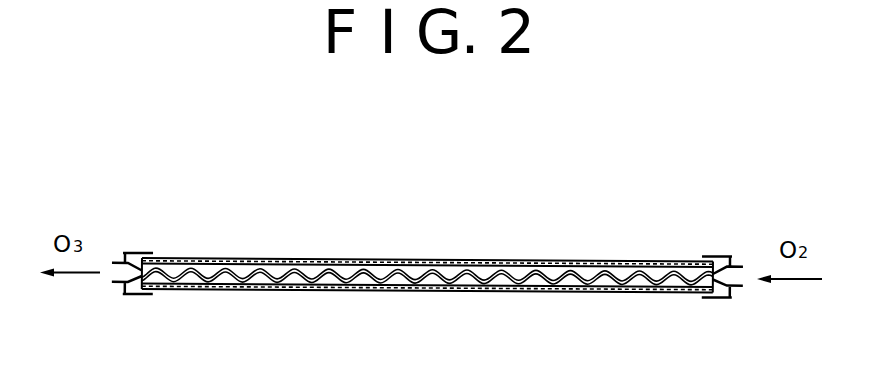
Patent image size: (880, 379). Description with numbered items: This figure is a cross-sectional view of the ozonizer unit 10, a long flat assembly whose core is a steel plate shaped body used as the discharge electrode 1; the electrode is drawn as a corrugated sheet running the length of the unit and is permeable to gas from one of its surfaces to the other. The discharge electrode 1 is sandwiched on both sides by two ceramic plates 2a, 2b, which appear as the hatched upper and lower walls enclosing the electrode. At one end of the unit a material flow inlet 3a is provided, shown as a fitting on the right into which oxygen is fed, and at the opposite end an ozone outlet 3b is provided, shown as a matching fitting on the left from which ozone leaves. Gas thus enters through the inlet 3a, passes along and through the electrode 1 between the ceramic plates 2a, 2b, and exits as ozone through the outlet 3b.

The ozonizer unit 10 is at (427, 214).
The discharge electrode 1 is at (427, 276).
The ceramic plate 2a is at (427, 262).
The ceramic plate 2b is at (427, 287).
The material flow inlet 3a is at (722, 276).
The ozone outlet 3b is at (132, 273).